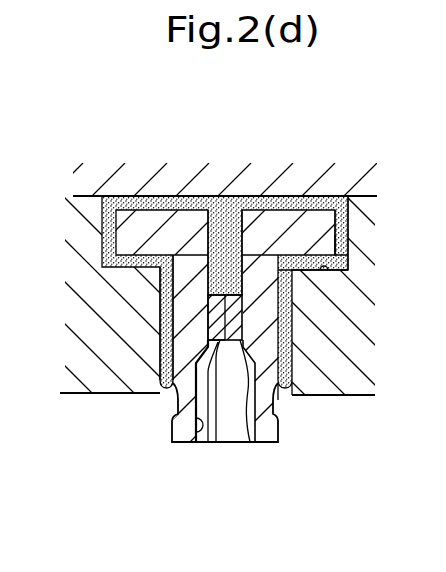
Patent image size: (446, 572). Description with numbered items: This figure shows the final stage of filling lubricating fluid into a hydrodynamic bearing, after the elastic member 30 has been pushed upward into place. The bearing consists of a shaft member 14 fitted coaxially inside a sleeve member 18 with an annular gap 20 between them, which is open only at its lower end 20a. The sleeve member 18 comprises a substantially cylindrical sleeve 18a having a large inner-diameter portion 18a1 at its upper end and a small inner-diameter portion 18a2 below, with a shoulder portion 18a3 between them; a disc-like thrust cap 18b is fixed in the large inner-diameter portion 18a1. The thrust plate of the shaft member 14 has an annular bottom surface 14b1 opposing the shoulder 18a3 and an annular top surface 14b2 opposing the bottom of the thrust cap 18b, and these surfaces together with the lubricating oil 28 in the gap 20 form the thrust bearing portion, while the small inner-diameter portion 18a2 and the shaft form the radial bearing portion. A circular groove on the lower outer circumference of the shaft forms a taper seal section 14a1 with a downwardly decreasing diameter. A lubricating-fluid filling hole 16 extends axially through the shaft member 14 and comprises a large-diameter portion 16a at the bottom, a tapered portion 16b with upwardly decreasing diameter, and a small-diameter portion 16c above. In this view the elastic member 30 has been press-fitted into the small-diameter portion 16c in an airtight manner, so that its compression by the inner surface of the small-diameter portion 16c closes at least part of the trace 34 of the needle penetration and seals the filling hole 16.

The shaft member 14 is at (270, 443).
The taper seal section 14a1 is at (176, 394).
The annular bottom surface of the thrust plate 14b1 is at (138, 256).
The annular top surface of the thrust plate 14b2 is at (140, 208).
The lubricating-fluid filling hole 16 is at (225, 425).
The large-diameter portion 16a is at (190, 443).
The tapered portion 16b is at (250, 442).
The small-diameter portion 16c is at (243, 239).
The sleeve member 18 is at (110, 395).
The sleeve 18a is at (312, 347).
The large inner-diameter portion 18a1 is at (363, 237).
The small inner-diameter portion 18a2 is at (294, 394).
The shoulder portion 18a3 is at (325, 270).
The thrust cap 18b is at (337, 183).
The gap 20 is at (103, 240).
The lower end of the gap 20a is at (283, 393).
The lubricating oil 28 is at (223, 220).
The elastic member 30 is at (217, 323).
The trace of the needle penetration 34 is at (230, 312).